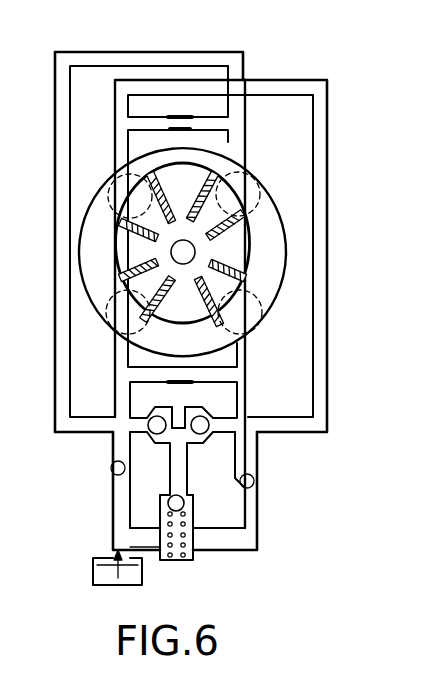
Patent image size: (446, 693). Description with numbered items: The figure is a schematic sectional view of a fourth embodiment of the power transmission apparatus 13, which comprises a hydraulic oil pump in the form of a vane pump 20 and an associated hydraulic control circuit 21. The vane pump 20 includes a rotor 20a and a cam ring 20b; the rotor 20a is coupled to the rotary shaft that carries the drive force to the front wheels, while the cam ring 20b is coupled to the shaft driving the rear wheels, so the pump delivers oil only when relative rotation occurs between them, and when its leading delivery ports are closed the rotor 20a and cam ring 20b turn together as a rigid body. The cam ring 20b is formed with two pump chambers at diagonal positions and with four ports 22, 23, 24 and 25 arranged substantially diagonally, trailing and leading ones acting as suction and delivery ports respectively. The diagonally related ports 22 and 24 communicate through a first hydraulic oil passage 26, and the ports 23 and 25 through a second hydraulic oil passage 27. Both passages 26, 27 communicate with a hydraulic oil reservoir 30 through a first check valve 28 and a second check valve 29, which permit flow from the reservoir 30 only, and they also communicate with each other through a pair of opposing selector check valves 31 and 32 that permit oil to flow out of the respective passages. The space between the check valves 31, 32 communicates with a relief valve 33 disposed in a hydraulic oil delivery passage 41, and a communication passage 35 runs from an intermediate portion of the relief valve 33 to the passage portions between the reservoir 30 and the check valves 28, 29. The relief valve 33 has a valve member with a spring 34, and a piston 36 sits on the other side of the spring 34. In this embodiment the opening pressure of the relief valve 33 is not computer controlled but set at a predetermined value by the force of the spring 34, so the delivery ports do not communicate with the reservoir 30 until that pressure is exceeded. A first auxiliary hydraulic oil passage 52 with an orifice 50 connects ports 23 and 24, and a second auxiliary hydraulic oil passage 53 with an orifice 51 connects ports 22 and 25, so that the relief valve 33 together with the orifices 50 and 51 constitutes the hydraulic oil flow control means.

The power transmission apparatus 13 is at (338, 70).
The vane pump 20 is at (292, 240).
The rotor 20a is at (250, 260).
The cam ring 20b is at (283, 292).
The hydraulic control circuit 21 is at (342, 412).
The port 22 is at (106, 306).
The port 23 is at (108, 197).
The port 24 is at (249, 202).
The port 25 is at (262, 322).
The first hydraulic oil passage 26 is at (125, 33).
The second hydraulic oil passage 27 is at (172, 80).
The first check valve 28 is at (111, 456).
The second check valve 29 is at (256, 483).
The hydraulic oil reservoir 30 is at (98, 588).
The selector check valve 31 is at (150, 472).
The selector check valve 32 is at (216, 472).
The relief valve 33 is at (195, 513).
The spring 34 is at (168, 522).
The communication passage 35 is at (152, 547).
The piston 36 is at (184, 496).
The hydraulic oil delivery passage 41 is at (170, 478).
The orifice 50 is at (180, 115).
The orifice 51 is at (190, 368).
The first auxiliary hydraulic oil passage 52 is at (130, 120).
The second auxiliary hydraulic oil passage 53 is at (135, 375).